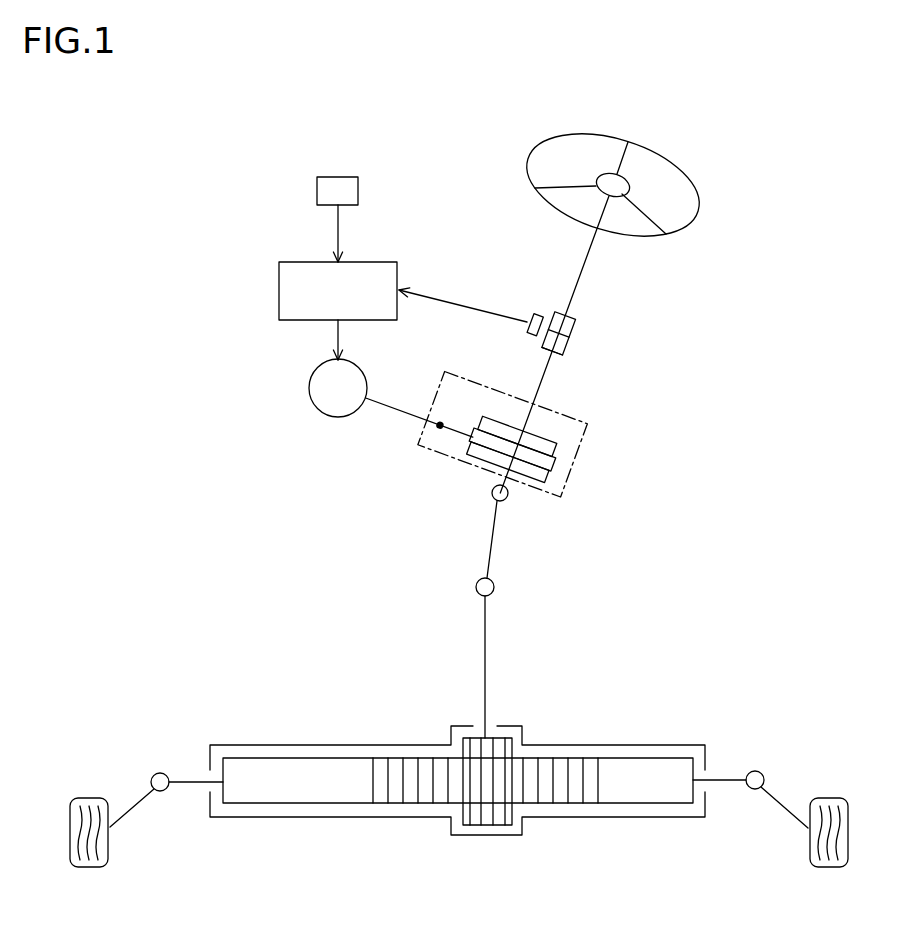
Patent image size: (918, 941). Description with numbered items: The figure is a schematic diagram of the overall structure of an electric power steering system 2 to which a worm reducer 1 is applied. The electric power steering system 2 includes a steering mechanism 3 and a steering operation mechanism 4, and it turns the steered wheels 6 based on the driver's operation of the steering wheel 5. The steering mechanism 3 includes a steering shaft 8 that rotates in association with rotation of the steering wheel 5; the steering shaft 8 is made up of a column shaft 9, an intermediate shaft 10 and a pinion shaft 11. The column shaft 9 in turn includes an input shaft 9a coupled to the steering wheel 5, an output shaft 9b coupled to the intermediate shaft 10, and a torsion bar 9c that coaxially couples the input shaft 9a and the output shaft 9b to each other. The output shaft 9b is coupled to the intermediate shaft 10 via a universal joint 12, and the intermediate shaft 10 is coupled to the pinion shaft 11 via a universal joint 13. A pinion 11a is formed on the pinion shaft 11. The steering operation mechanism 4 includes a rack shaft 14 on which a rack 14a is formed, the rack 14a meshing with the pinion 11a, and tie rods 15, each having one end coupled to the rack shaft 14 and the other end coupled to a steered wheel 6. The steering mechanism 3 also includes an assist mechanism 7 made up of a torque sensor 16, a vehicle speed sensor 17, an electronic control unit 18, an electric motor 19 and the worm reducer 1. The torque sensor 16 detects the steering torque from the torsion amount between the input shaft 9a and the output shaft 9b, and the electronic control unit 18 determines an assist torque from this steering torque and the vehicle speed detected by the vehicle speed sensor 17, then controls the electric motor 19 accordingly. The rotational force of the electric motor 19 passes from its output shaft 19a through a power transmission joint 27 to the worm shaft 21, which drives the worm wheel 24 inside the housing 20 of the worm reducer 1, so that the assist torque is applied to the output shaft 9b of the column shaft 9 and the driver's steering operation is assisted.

The worm reducer 1 is at (556, 456).
The electric power steering system 2 is at (643, 157).
The steering mechanism 3 is at (710, 188).
The steering operation mechanism 4 is at (457, 827).
The steering wheel 5 is at (577, 135).
The steered wheel 6 is at (88, 867).
The assist mechanism 7 is at (347, 410).
The steering shaft 8 is at (592, 254).
The column shaft 9 is at (613, 350).
The input shaft 9a is at (576, 300).
The output shaft 9b is at (591, 374).
The torsion bar 9c is at (566, 336).
The intermediate shaft 10 is at (493, 548).
The pinion shaft 11 is at (488, 680).
The pinion 11a is at (487, 825).
The universal joint 12 is at (507, 496).
The universal joint 13 is at (494, 586).
The rack shaft 14 is at (458, 818).
The rack 14a is at (428, 803).
The tie rod 15 is at (133, 810).
The torque sensor 16 is at (540, 318).
The vehicle speed sensor 17 is at (317, 190).
The electronic control unit 18 is at (279, 290).
The electric motor 19 is at (334, 417).
The output shaft 19a is at (395, 413).
The housing 20 is at (578, 412).
The worm shaft 21 is at (560, 462).
The worm wheel 24 is at (545, 432).
The power transmission joint 27 is at (452, 432).